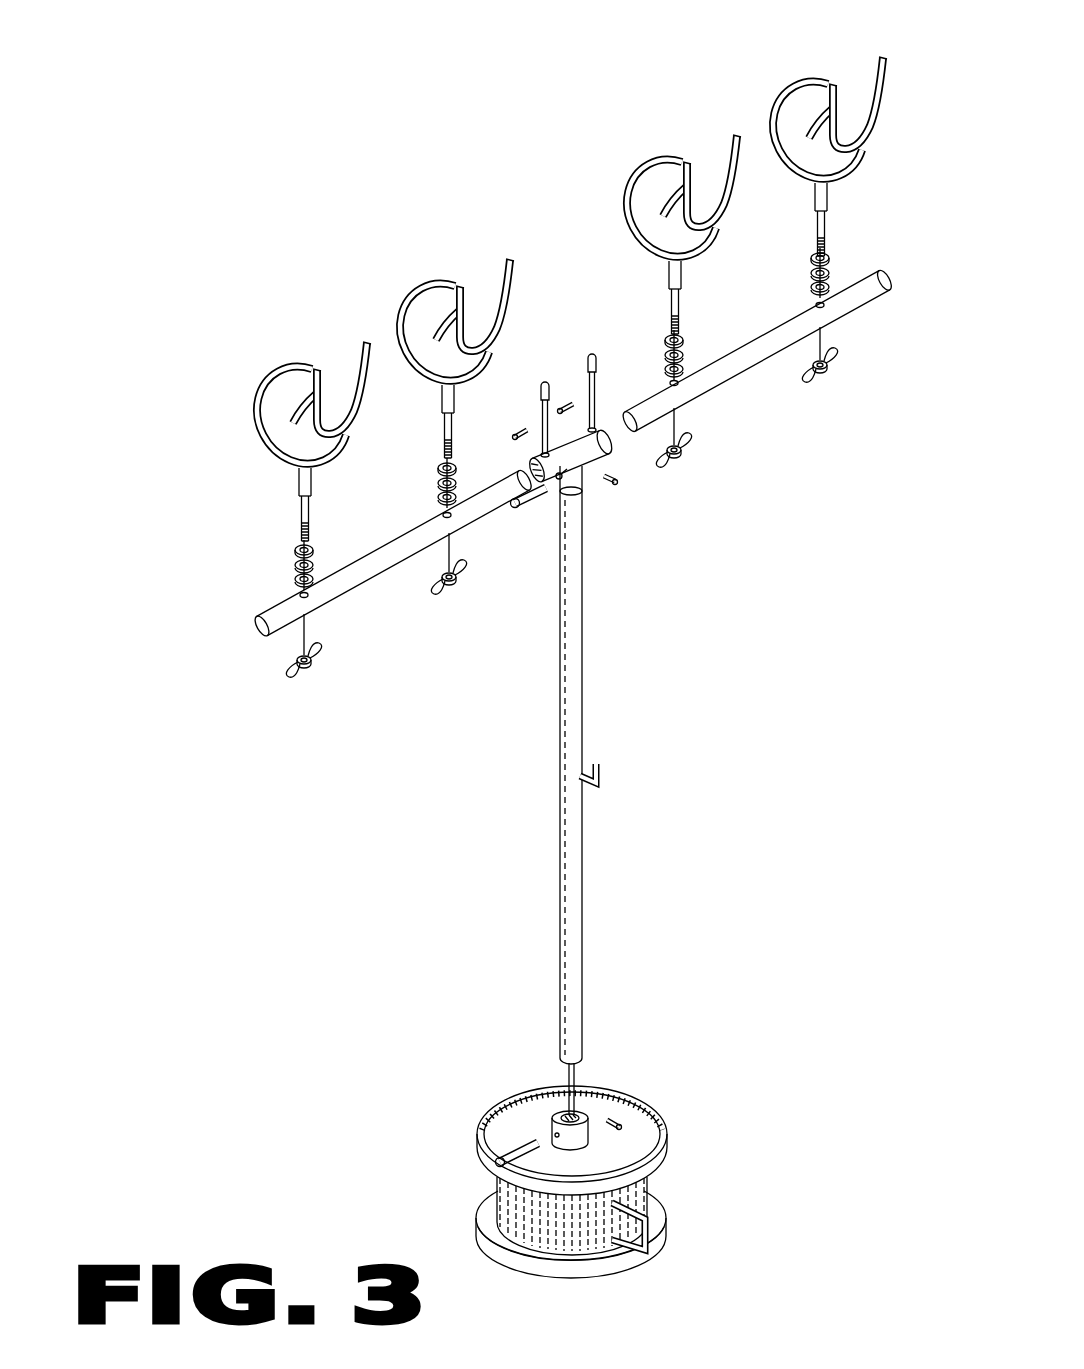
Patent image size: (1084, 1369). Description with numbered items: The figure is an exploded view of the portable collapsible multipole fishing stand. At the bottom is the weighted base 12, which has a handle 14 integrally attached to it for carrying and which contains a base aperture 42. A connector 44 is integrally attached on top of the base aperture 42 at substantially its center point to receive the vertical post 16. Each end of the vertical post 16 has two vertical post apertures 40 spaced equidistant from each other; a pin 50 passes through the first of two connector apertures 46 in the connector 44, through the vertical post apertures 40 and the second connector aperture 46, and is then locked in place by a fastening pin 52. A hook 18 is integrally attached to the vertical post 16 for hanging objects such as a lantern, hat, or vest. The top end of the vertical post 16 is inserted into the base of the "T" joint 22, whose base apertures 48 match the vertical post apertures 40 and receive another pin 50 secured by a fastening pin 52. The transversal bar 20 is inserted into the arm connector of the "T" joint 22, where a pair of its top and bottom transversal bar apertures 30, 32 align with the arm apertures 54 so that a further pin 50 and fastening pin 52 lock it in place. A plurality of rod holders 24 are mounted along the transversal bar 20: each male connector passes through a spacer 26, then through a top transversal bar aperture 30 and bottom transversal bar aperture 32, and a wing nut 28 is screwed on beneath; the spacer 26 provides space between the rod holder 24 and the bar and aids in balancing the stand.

The weighted base 12 is at (573, 1182).
The handle 14 is at (657, 1210).
The vertical post 16 is at (583, 650).
The hook 18 is at (601, 786).
The transversal bar 20 is at (730, 372).
The "T" joint 22 is at (620, 450).
The rod holder 24 is at (460, 295).
The spacer 26 is at (295, 578).
The wing nut 28 is at (290, 668).
The top transversal bar aperture 30 is at (299, 595).
The bottom transversal bar aperture 32 is at (440, 535).
The vertical post aperture 40 is at (557, 508).
The base aperture 42 is at (578, 1116).
The connector 44 is at (635, 1148).
The connector aperture 46 is at (559, 1137).
The base aperture of "T" joint 48 is at (561, 735).
The pin 50 is at (545, 383).
The fastening pin 52 is at (565, 405).
The arm aperture 54 is at (543, 452).